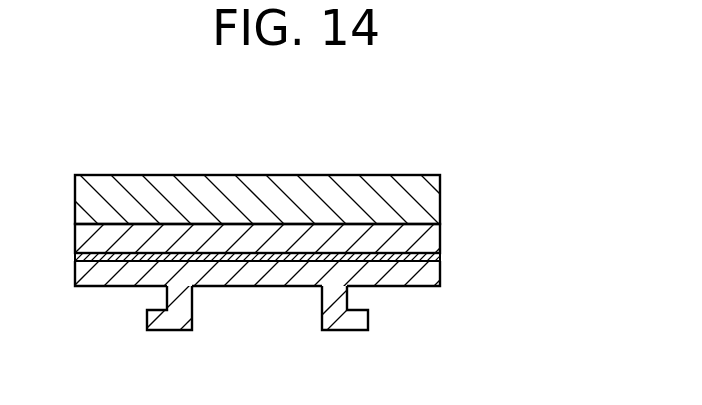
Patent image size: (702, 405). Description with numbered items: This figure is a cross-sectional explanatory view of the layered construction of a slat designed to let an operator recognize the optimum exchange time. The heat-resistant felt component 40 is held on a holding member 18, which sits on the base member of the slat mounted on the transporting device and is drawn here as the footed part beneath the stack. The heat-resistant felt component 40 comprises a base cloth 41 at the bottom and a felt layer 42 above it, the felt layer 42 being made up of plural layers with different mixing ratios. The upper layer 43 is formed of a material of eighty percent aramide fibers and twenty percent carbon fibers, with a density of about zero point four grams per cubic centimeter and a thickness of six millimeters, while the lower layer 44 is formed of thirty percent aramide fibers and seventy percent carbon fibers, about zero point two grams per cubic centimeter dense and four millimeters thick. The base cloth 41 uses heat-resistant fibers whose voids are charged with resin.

The holding member 18 is at (432, 287).
The heat-resistant felt component 40 is at (316, 229).
The base cloth 41 is at (441, 260).
The felt layer 42 is at (288, 214).
The upper layer 43 is at (441, 199).
The lower layer 44 is at (441, 243).